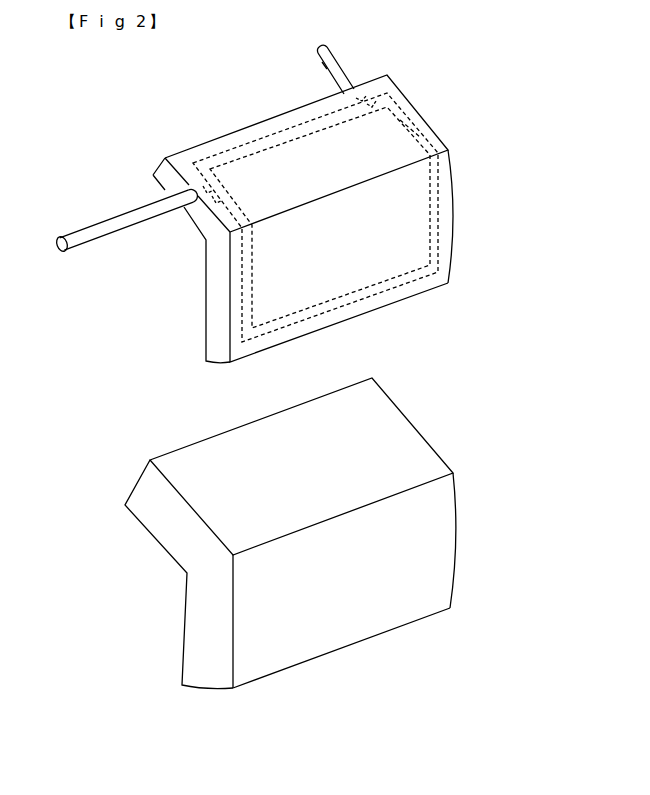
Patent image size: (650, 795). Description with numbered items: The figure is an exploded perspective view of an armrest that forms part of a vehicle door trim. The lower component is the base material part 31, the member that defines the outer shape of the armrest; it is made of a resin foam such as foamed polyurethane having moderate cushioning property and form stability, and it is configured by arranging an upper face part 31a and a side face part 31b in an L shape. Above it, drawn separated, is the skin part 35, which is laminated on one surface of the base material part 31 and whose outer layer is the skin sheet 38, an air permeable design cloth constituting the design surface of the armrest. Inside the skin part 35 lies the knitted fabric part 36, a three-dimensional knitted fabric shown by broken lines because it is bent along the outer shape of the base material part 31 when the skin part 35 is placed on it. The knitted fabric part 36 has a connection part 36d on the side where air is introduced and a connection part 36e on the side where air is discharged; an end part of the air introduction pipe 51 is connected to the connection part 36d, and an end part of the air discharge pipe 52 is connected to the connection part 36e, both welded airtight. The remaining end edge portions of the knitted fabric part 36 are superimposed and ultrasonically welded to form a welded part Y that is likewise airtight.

The base material part 31 is at (290, 533).
The upper face part 31a is at (350, 422).
The side face part 31b is at (267, 620).
The skin part 35 is at (331, 215).
The knitted fabric part 36 is at (387, 252).
The connection part 36d is at (197, 190).
The connection part 36e is at (357, 92).
The skin sheet 38 is at (270, 277).
The air introduction pipe 51 is at (107, 227).
The air discharge pipe 52 is at (320, 53).
The welded part Y is at (410, 120).